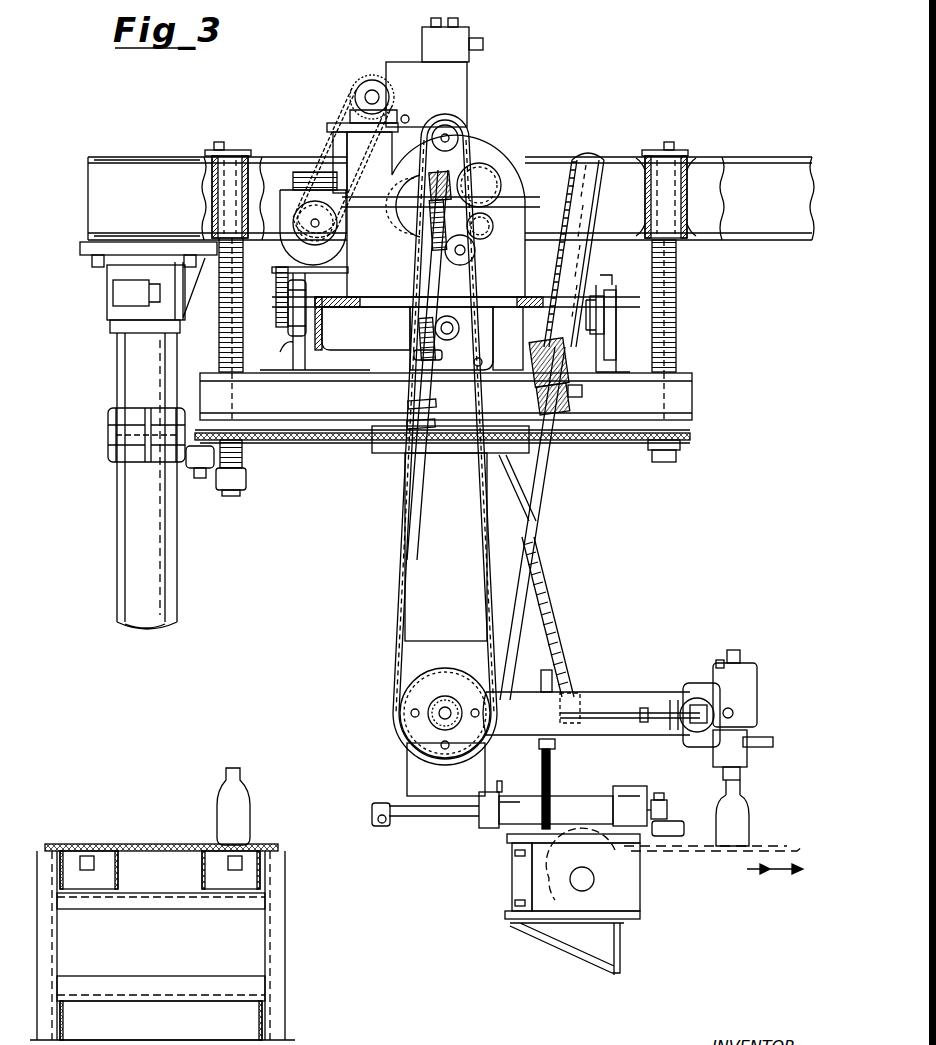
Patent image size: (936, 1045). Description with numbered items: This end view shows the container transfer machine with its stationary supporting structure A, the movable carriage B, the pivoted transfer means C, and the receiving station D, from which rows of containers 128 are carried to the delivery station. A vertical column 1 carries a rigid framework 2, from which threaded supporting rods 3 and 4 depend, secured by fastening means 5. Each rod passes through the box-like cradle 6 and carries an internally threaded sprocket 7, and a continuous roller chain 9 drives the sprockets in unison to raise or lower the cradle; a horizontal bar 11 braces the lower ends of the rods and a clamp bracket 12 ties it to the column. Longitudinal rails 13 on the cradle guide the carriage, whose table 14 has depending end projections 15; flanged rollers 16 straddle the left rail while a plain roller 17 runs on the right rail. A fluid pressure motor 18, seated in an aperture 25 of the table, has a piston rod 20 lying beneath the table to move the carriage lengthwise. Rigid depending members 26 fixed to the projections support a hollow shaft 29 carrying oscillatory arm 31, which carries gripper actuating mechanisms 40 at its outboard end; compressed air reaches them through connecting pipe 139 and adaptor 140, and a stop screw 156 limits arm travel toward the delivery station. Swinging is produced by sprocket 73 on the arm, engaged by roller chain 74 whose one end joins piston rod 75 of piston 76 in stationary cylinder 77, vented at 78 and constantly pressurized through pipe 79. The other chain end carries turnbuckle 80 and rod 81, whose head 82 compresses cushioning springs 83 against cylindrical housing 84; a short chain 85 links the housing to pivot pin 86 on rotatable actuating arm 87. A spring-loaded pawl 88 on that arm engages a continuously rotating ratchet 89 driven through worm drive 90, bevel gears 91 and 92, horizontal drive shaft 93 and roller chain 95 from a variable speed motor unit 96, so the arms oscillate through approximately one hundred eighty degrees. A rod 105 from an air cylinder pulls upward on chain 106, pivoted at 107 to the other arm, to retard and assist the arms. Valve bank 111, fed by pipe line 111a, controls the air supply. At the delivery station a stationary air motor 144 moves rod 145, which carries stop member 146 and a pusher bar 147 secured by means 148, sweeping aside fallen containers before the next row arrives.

The vertical column 1 is at (165, 598).
The rigid framework 2 is at (80, 204).
The threaded supporting rod 3 is at (243, 462).
The threaded supporting rod 4 is at (680, 450).
The fastening means 5 is at (250, 156).
The cradle 6 is at (700, 408).
The sprocket 7 is at (692, 433).
The roller chain 9 is at (604, 444).
The horizontal bar 11 is at (246, 482).
The clamp bracket 12 is at (108, 446).
The longitudinal rail 13 is at (300, 360).
The table 14 is at (336, 310).
The depending end projection 15 is at (376, 472).
The flanged roller 16 is at (298, 302).
The plain roller 17 is at (612, 308).
The fluid pressure motor 18 is at (492, 354).
The piston rod 20 is at (452, 330).
The aperture 25 is at (512, 307).
The rigid depending member 26 is at (480, 552).
The horizontal shaft 29 is at (428, 714).
The oscillatory arm 31 is at (620, 736).
The pneumatic gripper actuating mechanism 40 is at (738, 683).
The sprocket 73 is at (430, 752).
The roller chain 74 is at (397, 602).
The piston rod 75 is at (531, 490).
The piston 76 is at (560, 358).
The stationary cylinder 77 is at (538, 358).
The vent 78 is at (590, 157).
The pipe 79 is at (582, 392).
The turnbuckle 80 is at (436, 405).
The rod 81 is at (442, 354).
The piston-like head 82 is at (480, 200).
The spring 83 is at (486, 220).
The cylindrical housing 84 is at (432, 280).
The chain 85 is at (432, 180).
The pivot pin 86 is at (462, 146).
The rotatable actuating arm 87 is at (424, 158).
The pawl 88 is at (476, 250).
The ratchet 89 is at (404, 218).
The worm and worm wheel drive 90 is at (500, 165).
The bevel gear 91 is at (404, 114).
The bevel gear 92 is at (426, 94).
The horizontal drive shaft 93 is at (370, 80).
The roller chain 95 is at (328, 140).
The variable speed drive motor unit 96 is at (282, 188).
The rod 105 is at (508, 506).
The roller chain 106 is at (542, 574).
The pivotal connection 107 is at (572, 693).
The valve bank 111 is at (428, 40).
The pipe line 111a is at (483, 43).
The row of containers 128 is at (248, 806).
The connecting pipe 139 is at (600, 713).
The adaptor 140 is at (695, 728).
The stationary air motor 144 is at (562, 810).
The rod 145 is at (410, 816).
The stop member 146 is at (374, 824).
The pusher bar 147 is at (684, 836).
The securing means 148 is at (663, 806).
The stop screw 156 is at (551, 772).
The supporting structure A is at (97, 300).
The movable carriage B is at (624, 331).
The transfer means C is at (714, 660).
The receiving station D is at (164, 838).